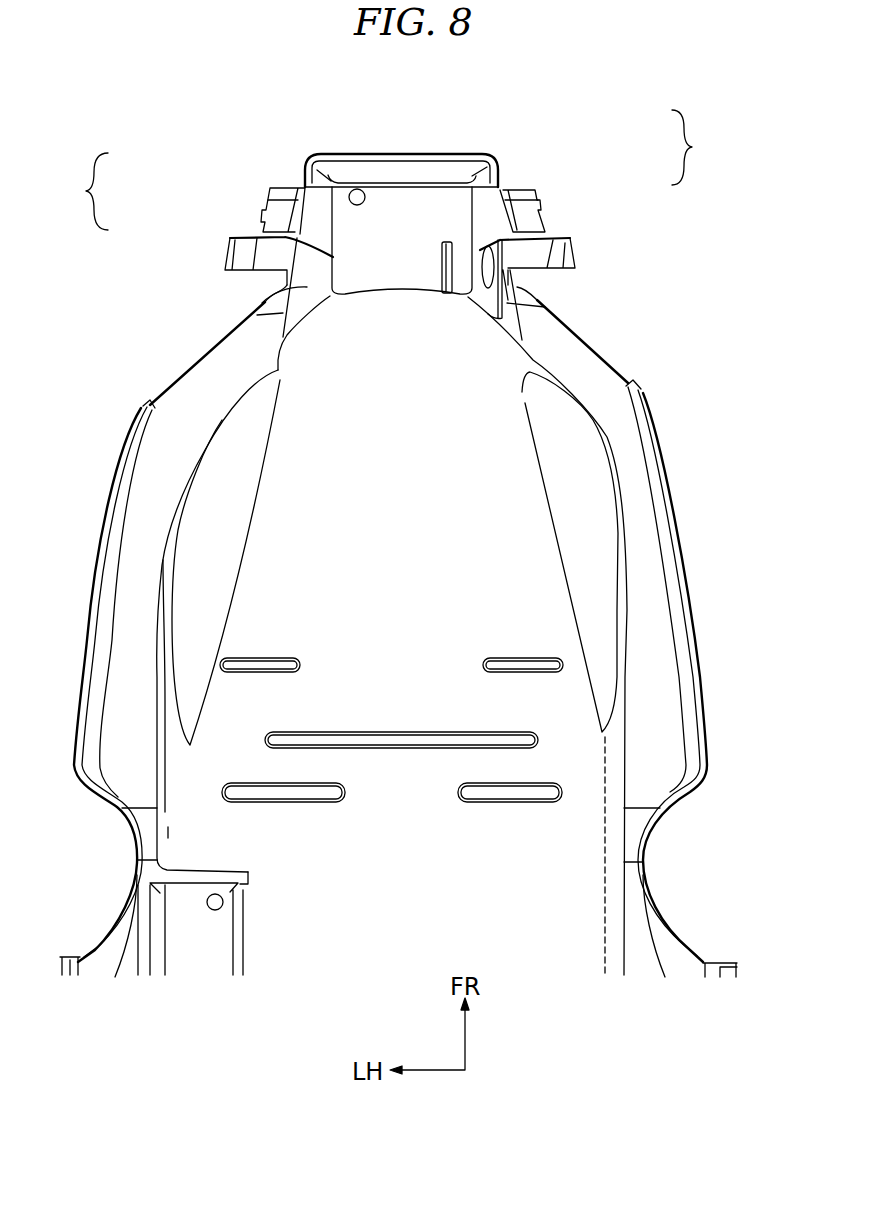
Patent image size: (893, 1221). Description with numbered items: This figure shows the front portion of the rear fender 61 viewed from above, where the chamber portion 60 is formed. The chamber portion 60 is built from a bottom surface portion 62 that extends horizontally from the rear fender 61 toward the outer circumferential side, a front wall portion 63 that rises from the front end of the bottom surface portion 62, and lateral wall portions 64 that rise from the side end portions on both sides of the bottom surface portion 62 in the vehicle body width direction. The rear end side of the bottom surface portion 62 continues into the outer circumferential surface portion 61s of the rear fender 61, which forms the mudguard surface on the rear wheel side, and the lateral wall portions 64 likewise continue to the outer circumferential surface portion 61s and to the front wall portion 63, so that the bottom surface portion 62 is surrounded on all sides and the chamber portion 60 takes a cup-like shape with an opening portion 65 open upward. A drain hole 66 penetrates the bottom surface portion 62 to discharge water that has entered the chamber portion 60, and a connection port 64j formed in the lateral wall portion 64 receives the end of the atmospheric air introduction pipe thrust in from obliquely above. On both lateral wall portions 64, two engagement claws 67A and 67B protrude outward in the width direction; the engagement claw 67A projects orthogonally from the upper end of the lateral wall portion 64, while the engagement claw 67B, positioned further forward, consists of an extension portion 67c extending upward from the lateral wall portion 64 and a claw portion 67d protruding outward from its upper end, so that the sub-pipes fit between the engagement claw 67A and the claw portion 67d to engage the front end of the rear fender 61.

The chamber portion 60 is at (455, 172).
The rear fender 61 is at (676, 506).
The outer circumferential surface portion 61s is at (455, 387).
The bottom surface portion 62 is at (425, 203).
The front wall portion 63 is at (345, 155).
The lateral wall portion 64 is at (262, 303).
The connection port 64j is at (494, 268).
The opening portion 65 is at (385, 205).
The drain hole 66 is at (345, 197).
The engagement claw 67A is at (232, 250).
The engagement claw 67B is at (388, 170).
The extension portion 67c is at (305, 190).
The claw portion 67d is at (278, 213).